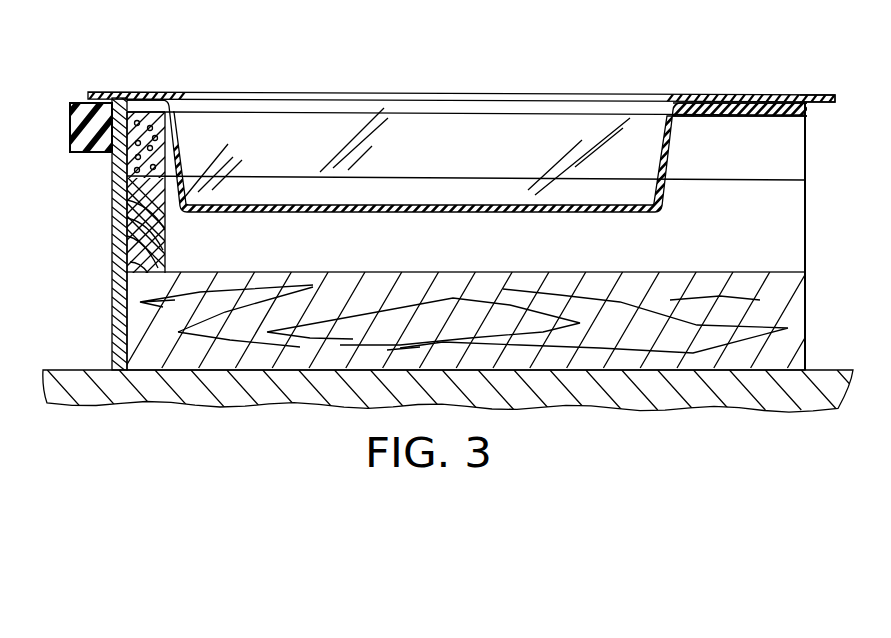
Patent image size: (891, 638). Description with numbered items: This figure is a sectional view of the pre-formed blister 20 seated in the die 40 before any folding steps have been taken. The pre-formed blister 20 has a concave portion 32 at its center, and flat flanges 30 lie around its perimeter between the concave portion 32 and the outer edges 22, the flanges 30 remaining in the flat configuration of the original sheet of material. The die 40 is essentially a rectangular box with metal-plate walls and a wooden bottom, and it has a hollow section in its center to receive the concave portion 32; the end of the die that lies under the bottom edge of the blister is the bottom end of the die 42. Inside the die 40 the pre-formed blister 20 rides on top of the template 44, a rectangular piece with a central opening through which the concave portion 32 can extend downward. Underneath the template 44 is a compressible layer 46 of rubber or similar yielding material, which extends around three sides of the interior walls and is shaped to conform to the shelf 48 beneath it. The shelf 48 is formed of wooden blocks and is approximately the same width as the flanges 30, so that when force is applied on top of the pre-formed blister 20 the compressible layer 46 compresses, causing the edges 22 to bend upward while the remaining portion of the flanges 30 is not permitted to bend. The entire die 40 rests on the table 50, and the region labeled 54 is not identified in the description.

The pre-formed blister 20 is at (775, 78).
The edges 22 is at (836, 98).
The flanges 30 is at (123, 92).
The concave portion 32 is at (613, 213).
The die 40 is at (812, 257).
The bottom end of the die 42 is at (120, 238).
The template 44 is at (155, 100).
The compressible layer 46 is at (140, 160).
The shelf 48 is at (158, 240).
The table 50 is at (822, 382).
The interior space / liquid 54 is at (790, 160).